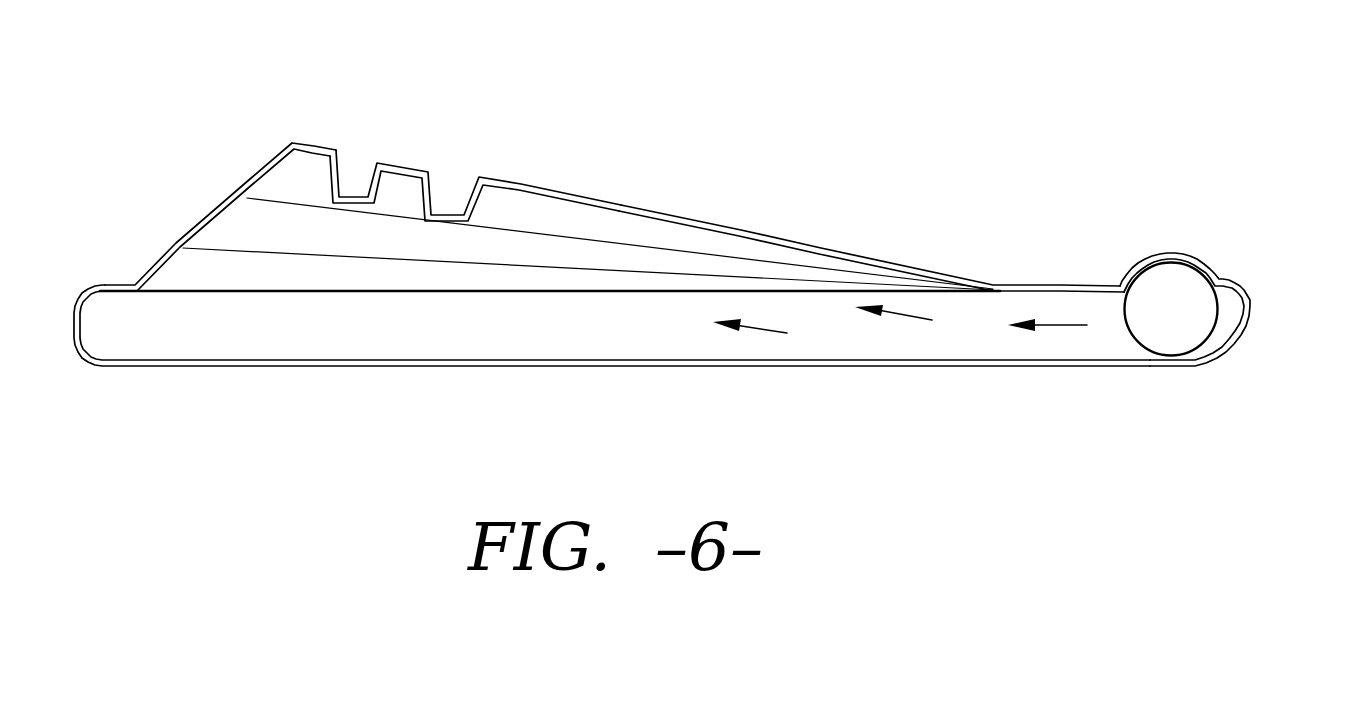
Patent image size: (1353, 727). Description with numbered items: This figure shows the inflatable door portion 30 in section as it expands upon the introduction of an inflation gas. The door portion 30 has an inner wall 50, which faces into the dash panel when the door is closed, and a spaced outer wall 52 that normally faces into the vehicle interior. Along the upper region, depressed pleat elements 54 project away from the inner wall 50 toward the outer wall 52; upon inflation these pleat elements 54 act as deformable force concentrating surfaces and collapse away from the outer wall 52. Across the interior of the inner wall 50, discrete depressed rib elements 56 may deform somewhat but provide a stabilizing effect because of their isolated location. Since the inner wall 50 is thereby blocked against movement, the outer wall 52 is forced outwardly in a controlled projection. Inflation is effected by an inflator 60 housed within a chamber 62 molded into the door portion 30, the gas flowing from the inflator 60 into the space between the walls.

The inflatable door portion 30 is at (940, 104).
The inner wall 50 is at (647, 218).
The outer wall 52 is at (798, 368).
The depressed pleat elements 54 is at (232, 195).
The depressed rib elements 56 is at (353, 165).
The inflator 60 is at (1173, 283).
The chamber 62 is at (1228, 313).